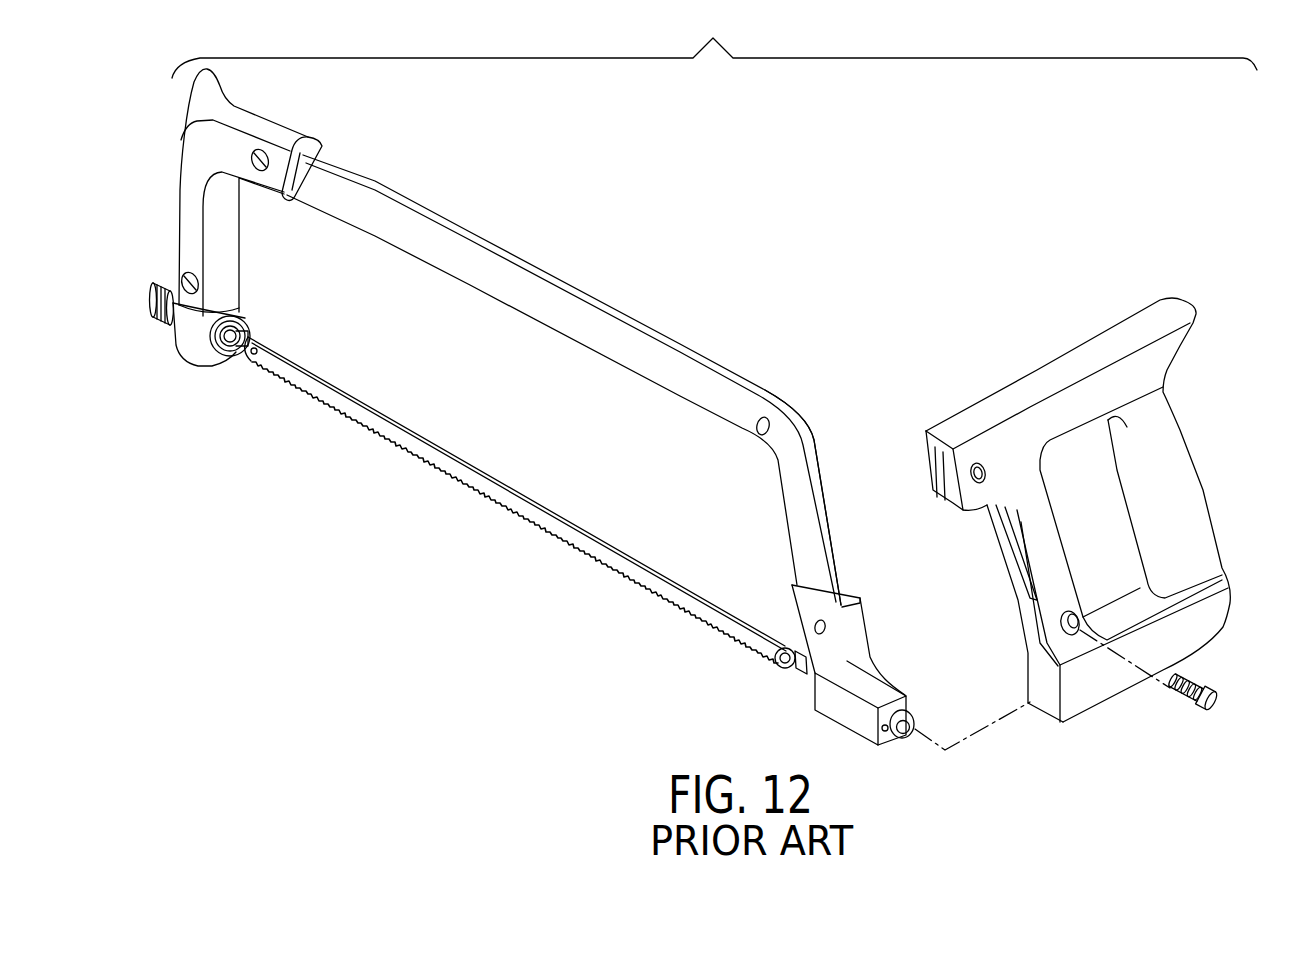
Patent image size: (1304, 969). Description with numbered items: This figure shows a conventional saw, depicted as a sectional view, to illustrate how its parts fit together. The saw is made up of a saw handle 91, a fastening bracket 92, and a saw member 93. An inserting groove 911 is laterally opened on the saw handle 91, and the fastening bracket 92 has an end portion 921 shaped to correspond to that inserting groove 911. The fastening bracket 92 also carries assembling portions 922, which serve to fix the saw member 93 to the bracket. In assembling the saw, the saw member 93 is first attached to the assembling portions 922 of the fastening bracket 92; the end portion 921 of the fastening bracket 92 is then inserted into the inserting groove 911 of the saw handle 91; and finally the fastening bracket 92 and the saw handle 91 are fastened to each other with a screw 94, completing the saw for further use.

The saw handle 91 is at (1183, 464).
The inserting groove 911 is at (943, 468).
The fastening bracket 92 is at (513, 281).
The end portion 921 is at (794, 423).
The assembling portions 922 is at (236, 349).
The saw member 93 is at (411, 445).
The screw 94 is at (1208, 690).